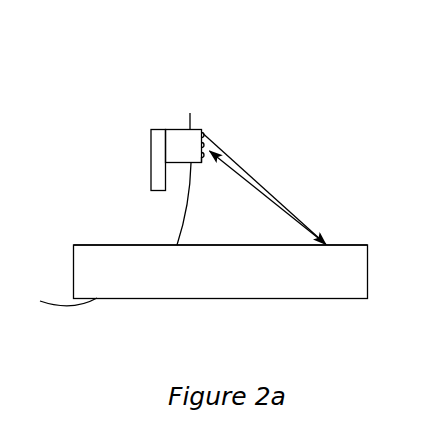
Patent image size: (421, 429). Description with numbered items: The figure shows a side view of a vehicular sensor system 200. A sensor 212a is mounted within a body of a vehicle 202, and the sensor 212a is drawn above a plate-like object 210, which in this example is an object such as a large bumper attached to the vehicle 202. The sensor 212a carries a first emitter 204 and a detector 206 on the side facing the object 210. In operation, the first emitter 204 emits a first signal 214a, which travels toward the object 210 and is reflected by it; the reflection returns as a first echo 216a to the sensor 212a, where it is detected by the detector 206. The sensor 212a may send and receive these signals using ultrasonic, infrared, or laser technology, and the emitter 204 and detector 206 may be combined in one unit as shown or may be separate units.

The vehicular sensor system 200 is at (322, 107).
The vehicle 202 is at (65, 307).
The first emitter 204 is at (203, 126).
The detector 206 is at (203, 163).
The object 210 is at (358, 245).
The sensor 212a is at (168, 128).
The first signal 214a is at (273, 193).
The first echo 216a is at (256, 189).